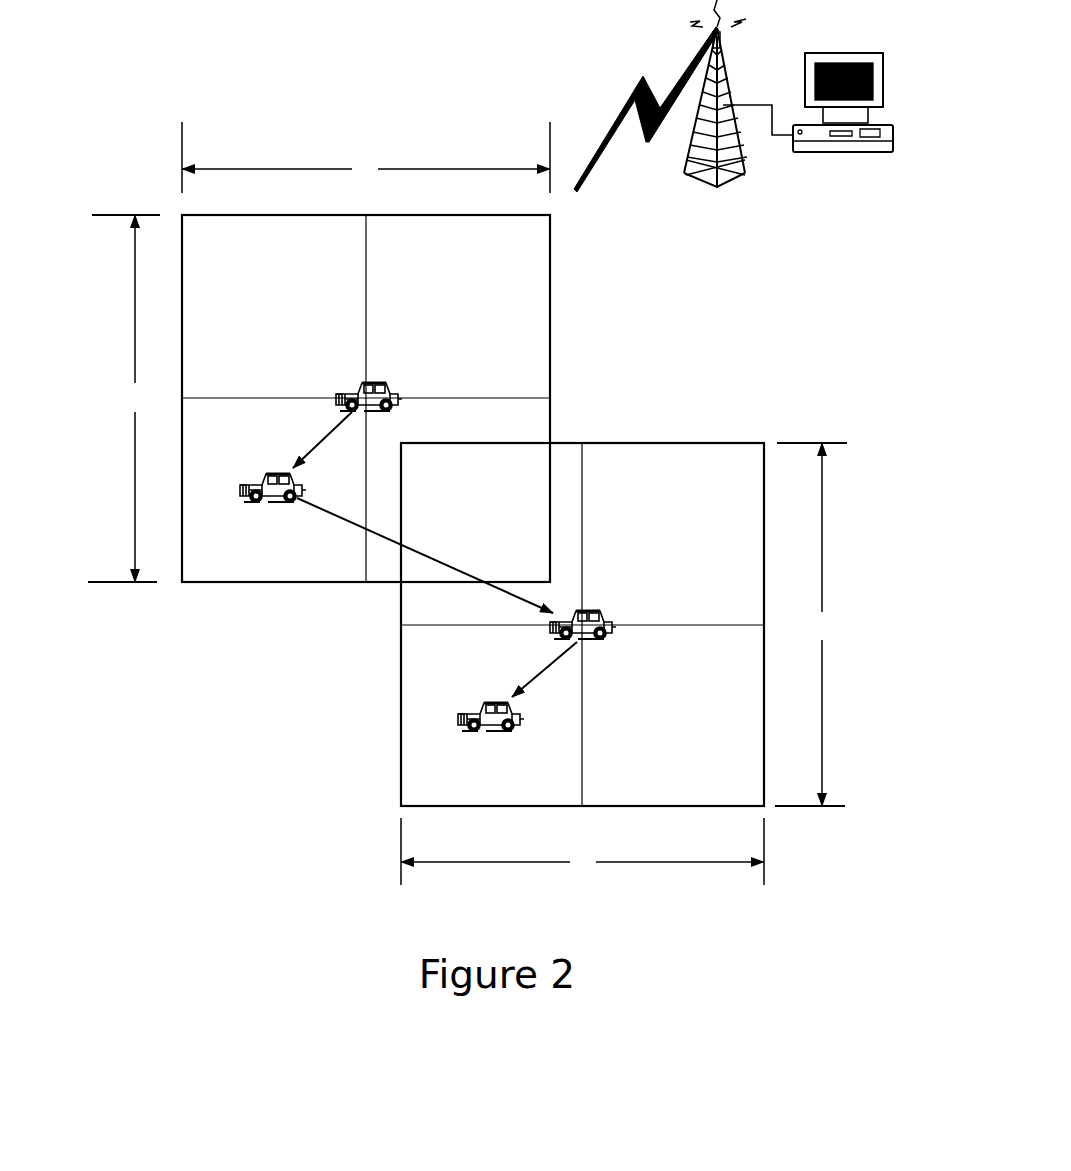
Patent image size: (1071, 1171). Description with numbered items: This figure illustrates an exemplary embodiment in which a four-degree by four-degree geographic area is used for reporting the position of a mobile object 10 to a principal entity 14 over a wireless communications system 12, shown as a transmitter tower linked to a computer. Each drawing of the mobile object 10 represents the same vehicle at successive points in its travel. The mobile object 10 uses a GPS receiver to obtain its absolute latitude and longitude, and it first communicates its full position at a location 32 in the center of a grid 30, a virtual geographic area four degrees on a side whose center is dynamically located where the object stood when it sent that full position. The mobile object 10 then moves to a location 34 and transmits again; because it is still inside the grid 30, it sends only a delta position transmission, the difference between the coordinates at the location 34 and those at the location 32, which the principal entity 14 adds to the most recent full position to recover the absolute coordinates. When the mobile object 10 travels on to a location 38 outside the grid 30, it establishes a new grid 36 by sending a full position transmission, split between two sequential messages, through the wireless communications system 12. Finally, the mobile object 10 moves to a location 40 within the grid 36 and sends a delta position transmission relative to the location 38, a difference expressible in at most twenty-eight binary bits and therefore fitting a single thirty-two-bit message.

The mobile object 10 is at (337, 393).
The wireless communications system 12 is at (718, 187).
The principal entity 14 is at (837, 152).
The grid 30 is at (182, 215).
The location 32 is at (378, 380).
The location 34 is at (290, 503).
The grid 36 is at (617, 443).
The location 38 is at (587, 647).
The location 40 is at (487, 727).